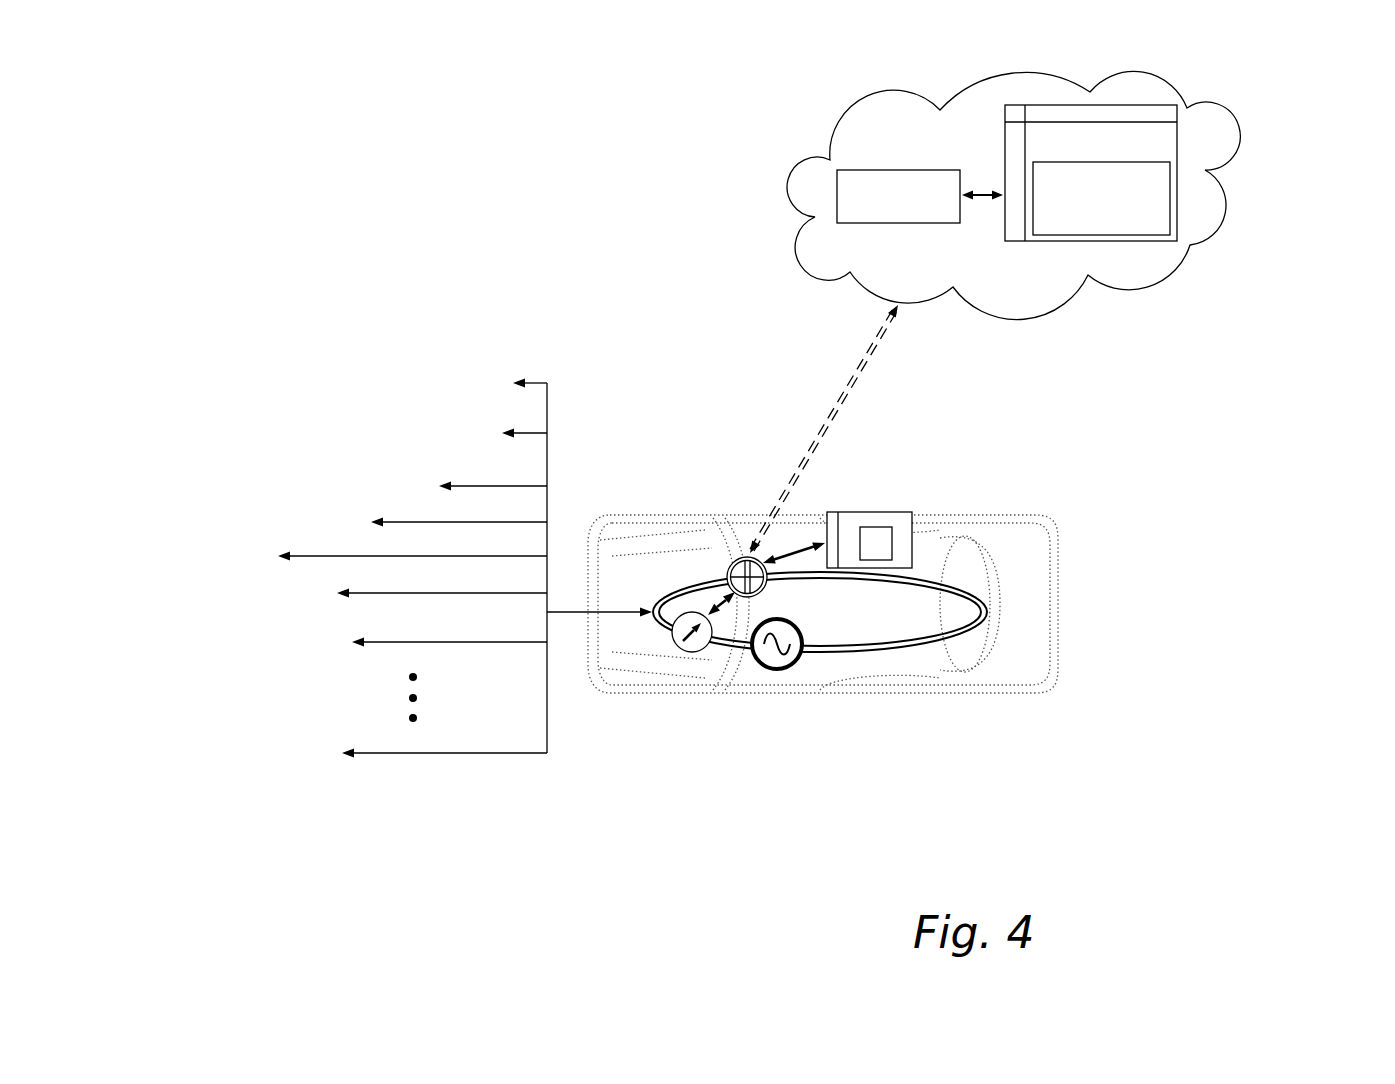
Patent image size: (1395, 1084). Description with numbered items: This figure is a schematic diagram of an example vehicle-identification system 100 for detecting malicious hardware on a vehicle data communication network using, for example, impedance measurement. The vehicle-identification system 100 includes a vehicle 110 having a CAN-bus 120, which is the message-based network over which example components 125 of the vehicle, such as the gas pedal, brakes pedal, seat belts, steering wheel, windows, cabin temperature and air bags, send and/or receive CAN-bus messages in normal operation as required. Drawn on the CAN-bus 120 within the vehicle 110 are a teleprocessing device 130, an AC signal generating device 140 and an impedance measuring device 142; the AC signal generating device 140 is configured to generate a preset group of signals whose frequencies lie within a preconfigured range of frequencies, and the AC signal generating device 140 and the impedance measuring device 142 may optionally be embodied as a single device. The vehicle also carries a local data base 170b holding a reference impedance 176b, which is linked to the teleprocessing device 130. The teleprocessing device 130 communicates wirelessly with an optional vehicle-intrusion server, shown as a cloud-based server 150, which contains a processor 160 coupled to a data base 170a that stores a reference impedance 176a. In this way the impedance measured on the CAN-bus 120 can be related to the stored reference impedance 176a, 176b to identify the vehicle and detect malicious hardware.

The vehicle-identification system 100 is at (1218, 672).
The vehicle 110 is at (1069, 606).
The CAN-bus 120 is at (852, 656).
The components 125 is at (508, 713).
The teleprocessing device 130 is at (740, 557).
The AC signal generating device 140 is at (770, 670).
The impedance measuring device 142 is at (669, 651).
The cloud-based server 150 is at (1166, 286).
The processor 160 is at (888, 170).
The database 170a is at (1189, 145).
The local database 170b is at (918, 491).
The reference impedance 176a is at (1177, 197).
The local reference impedance 176b is at (880, 527).